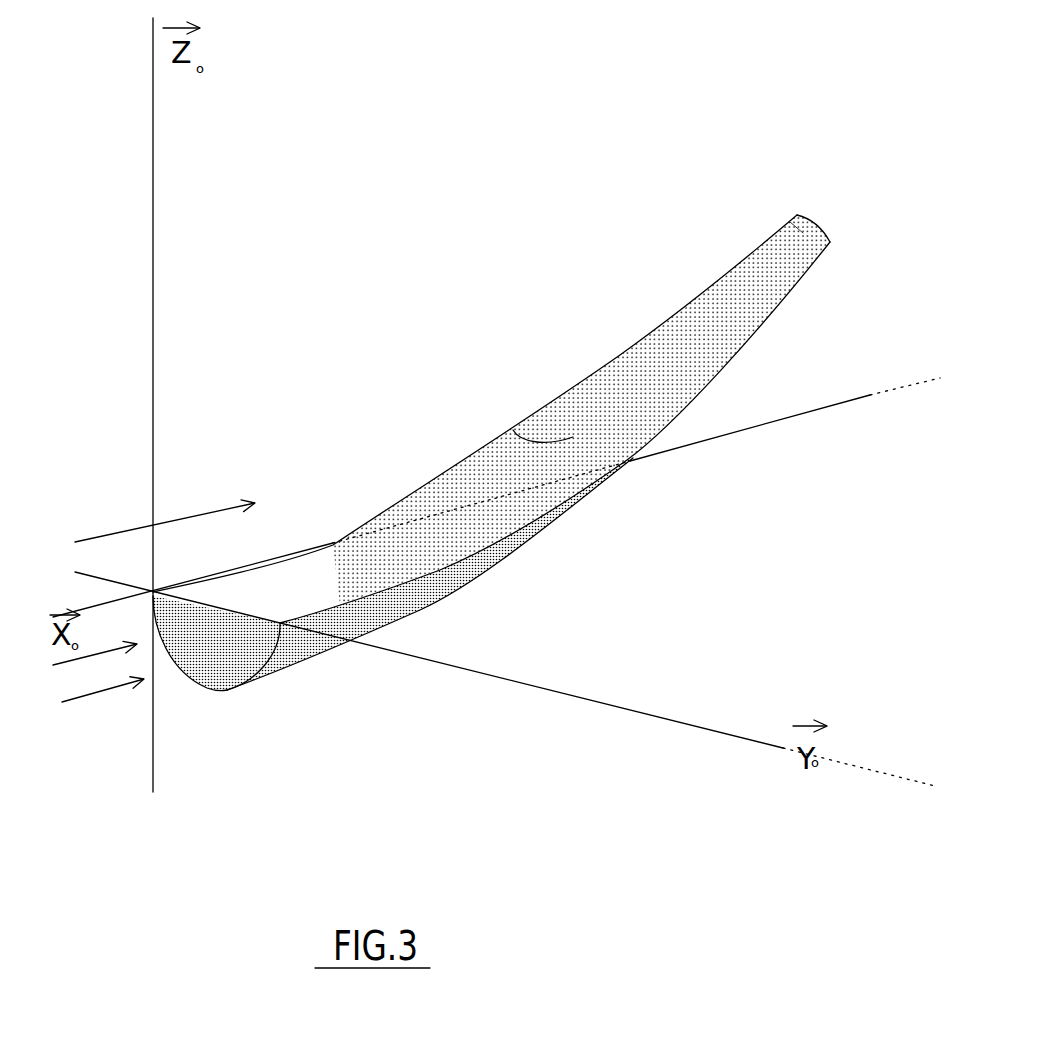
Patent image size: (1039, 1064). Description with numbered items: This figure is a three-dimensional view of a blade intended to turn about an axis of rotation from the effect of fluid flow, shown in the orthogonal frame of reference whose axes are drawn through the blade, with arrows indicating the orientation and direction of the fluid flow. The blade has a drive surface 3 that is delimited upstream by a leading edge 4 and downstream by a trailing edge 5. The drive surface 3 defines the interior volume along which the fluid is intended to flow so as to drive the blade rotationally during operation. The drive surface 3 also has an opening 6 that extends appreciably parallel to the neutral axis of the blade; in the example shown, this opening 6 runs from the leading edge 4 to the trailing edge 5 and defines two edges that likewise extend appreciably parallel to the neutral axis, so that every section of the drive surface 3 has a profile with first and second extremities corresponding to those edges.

The drive surface 3 is at (513, 555).
The leading edge 4 is at (237, 688).
The trailing edge 5 is at (812, 213).
The opening 6 is at (513, 430).